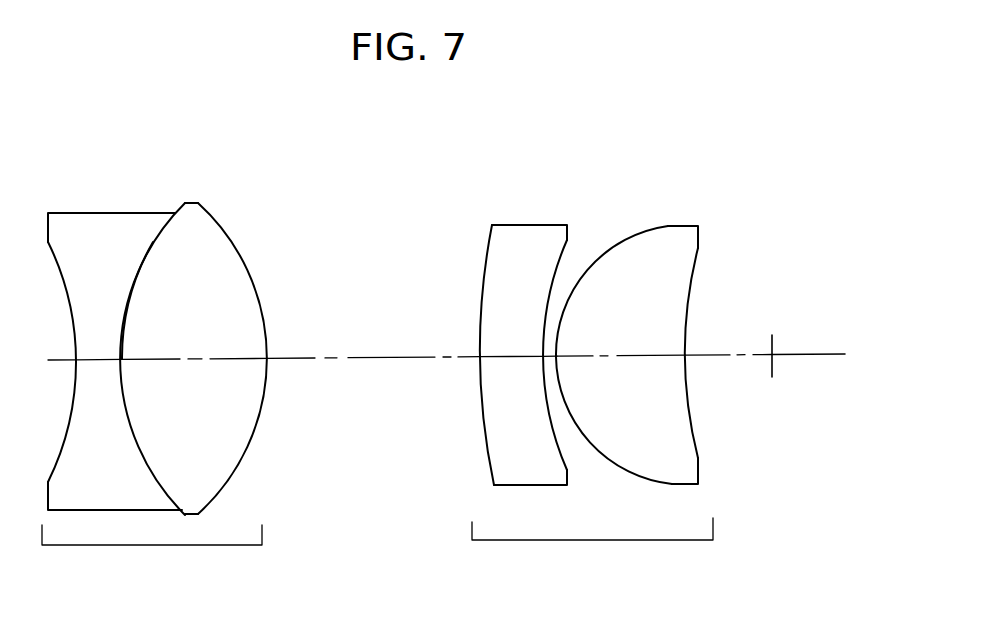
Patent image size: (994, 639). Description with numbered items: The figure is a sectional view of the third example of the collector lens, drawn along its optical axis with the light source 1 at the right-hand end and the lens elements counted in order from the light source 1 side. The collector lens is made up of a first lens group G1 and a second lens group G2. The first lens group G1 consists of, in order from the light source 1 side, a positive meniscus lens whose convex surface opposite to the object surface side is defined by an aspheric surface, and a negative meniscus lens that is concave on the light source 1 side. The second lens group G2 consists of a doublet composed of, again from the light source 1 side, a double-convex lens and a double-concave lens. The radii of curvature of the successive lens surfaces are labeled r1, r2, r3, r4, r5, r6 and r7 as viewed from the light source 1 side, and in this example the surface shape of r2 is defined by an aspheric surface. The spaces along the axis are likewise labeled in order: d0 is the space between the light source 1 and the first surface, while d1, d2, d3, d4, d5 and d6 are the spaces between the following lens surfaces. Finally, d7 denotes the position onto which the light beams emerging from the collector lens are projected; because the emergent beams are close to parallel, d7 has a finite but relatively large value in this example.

The light source 1 is at (775, 341).
The first lens group G1 is at (601, 360).
The second lens group G2 is at (164, 365).
The radius of curvature of first lens surface r1 is at (693, 277).
The radius of curvature of second lens surface r2 is at (633, 240).
The radius of curvature of third lens surface r3 is at (567, 245).
The radius of curvature of fourth lens surface r4 is at (485, 257).
The radius of curvature of fifth lens surface r5 is at (247, 263).
The radius of curvature of sixth lens surface r6 is at (153, 243).
The radius of curvature of seventh lens surface r7 is at (57, 258).
The space between light source and first surface d0 is at (720, 354).
The space between first and second lens surfaces d1 is at (627, 355).
The space between second and third lens surfaces d2 is at (553, 356).
The space between third and fourth lens surfaces d3 is at (506, 356).
The space between fourth and fifth lens surfaces d4 is at (375, 357).
The space between fifth and sixth lens surfaces d5 is at (192, 359).
The space between sixth and seventh lens surfaces d6 is at (102, 359).
The projection position of emergent light beams d7 is at (55, 360).